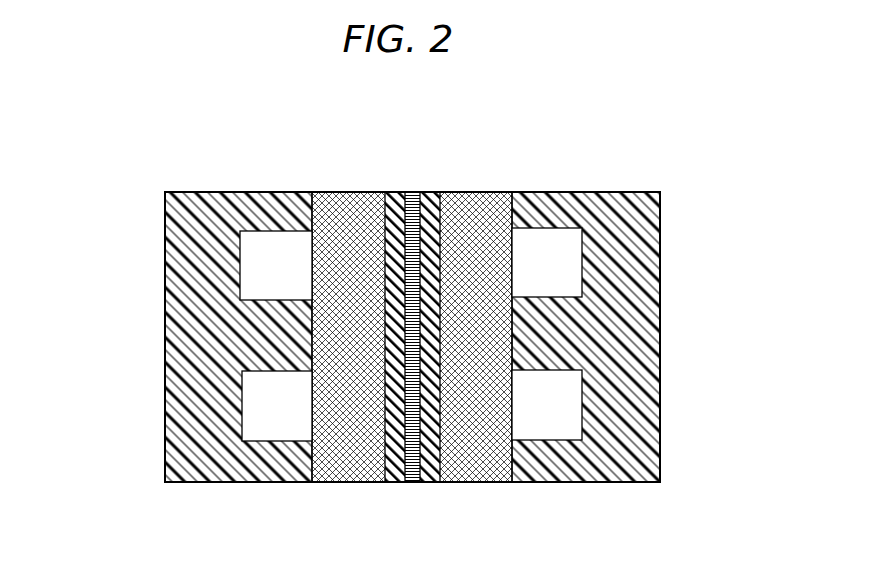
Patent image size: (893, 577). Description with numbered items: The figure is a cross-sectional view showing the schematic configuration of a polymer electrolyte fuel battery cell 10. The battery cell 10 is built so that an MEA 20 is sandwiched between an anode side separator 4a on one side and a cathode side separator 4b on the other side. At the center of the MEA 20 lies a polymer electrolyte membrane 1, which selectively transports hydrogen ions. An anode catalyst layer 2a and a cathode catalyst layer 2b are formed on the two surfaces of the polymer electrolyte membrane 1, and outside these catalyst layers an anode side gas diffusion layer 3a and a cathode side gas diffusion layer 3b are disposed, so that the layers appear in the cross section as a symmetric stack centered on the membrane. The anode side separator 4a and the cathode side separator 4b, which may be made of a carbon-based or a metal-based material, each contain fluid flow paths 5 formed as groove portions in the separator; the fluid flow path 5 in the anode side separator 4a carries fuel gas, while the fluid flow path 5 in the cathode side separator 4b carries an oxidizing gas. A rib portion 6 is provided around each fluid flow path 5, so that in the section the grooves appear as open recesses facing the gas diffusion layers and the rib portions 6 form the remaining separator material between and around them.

The battery cell 10 is at (660, 182).
The MEA 20 is at (512, 192).
The polymer electrolyte membrane 1 is at (410, 485).
The anode catalyst layer 2a is at (393, 485).
The cathode catalyst layer 2b is at (432, 485).
The anode side gas diffusion layer 3a is at (333, 485).
The cathode side gas diffusion layer 3b is at (492, 485).
The anode side separator 4a is at (235, 485).
The cathode side separator 4b is at (612, 485).
The fluid flow path 5 is at (278, 240).
The rib portion 6 is at (267, 330).